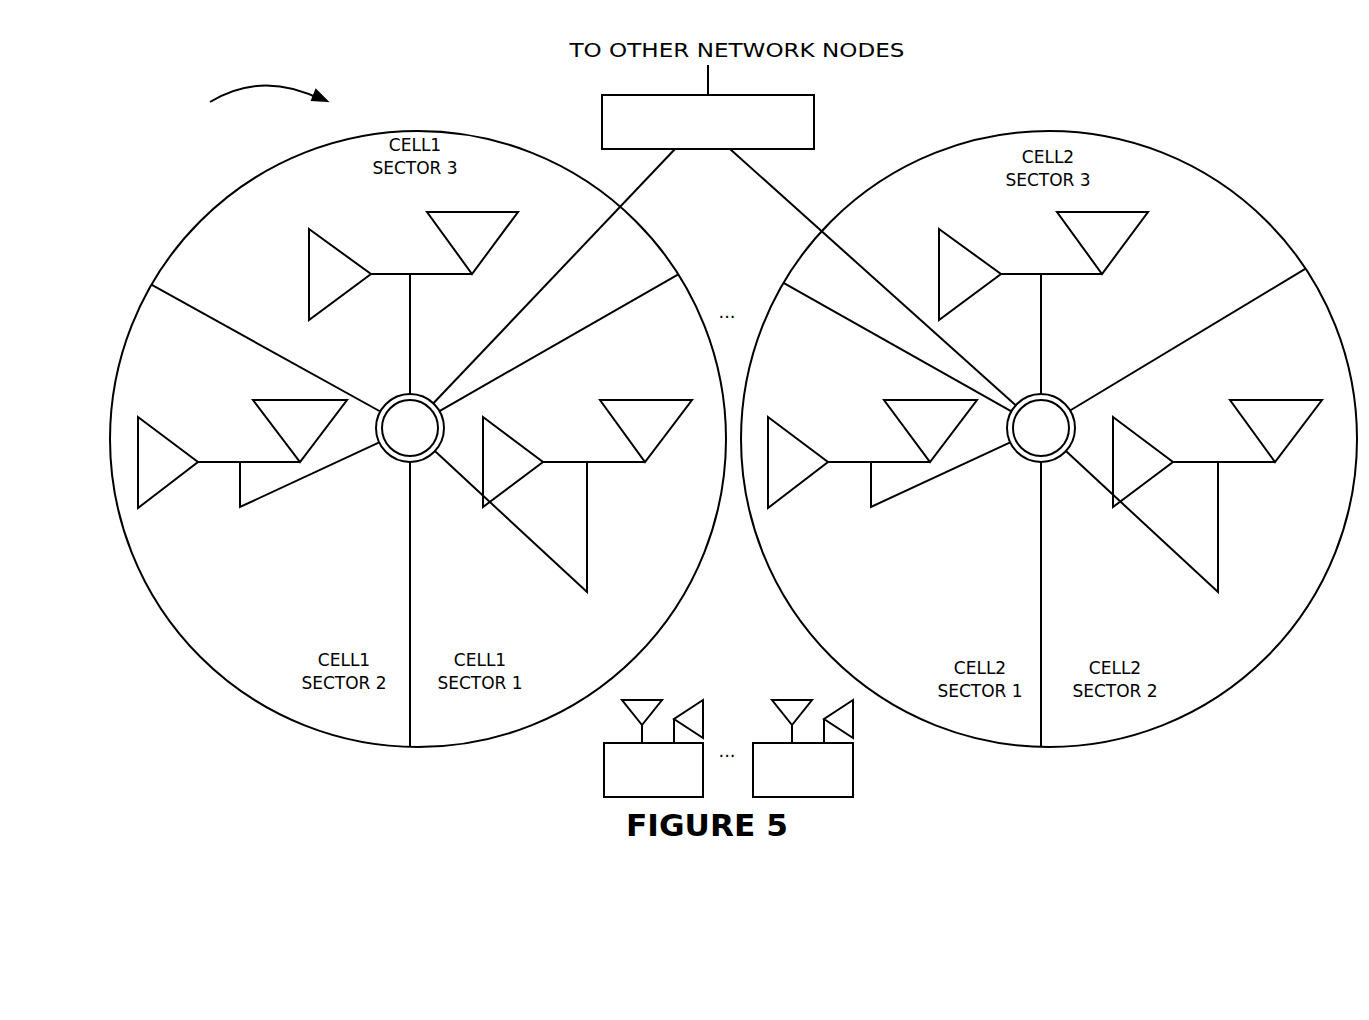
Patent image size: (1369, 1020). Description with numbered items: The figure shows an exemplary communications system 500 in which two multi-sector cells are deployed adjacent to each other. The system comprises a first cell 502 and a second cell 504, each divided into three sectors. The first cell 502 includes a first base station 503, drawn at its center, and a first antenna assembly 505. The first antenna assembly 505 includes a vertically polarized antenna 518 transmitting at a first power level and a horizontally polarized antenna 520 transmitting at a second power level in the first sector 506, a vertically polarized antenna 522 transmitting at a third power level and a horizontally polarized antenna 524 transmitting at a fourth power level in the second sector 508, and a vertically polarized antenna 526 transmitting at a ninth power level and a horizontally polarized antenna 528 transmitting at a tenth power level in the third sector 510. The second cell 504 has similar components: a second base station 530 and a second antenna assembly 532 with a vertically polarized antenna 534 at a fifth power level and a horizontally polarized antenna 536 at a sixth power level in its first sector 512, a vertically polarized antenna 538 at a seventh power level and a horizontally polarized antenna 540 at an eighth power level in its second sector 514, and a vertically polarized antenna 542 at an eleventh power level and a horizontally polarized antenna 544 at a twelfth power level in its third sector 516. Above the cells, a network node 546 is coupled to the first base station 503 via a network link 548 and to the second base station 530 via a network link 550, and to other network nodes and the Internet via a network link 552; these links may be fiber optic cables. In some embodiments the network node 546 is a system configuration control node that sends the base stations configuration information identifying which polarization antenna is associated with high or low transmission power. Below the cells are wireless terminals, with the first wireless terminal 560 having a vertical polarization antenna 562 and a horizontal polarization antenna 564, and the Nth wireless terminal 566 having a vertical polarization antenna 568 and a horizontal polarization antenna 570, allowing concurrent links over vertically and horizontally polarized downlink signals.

The communications system 500 is at (255, 109).
The first cell 502 is at (173, 252).
The first base station 503 is at (440, 418).
The second cell 504 is at (1262, 218).
The first antenna assembly 505 is at (381, 408).
The first sector 506 is at (453, 718).
The second sector 508 is at (342, 712).
The third sector 510 is at (463, 150).
The first sector 512 is at (986, 712).
The second sector 514 is at (1108, 715).
The third sector 516 is at (1050, 134).
The vertically polarized antenna 518 is at (658, 398).
The horizontally polarized antenna 520 is at (507, 433).
The vertically polarized antenna 522 is at (305, 399).
The horizontally polarized antenna 524 is at (174, 440).
The vertically polarized antenna 526 is at (485, 212).
The horizontally polarized antenna 528 is at (333, 250).
The second base station 530 is at (1072, 410).
The second antenna assembly 532 is at (1058, 396).
The vertically polarized antenna 534 is at (933, 398).
The horizontally polarized antenna 536 is at (830, 428).
The vertically polarized antenna 538 is at (1287, 398).
The horizontally polarized antenna 540 is at (1137, 431).
The vertically polarized antenna 542 is at (1118, 212).
The horizontally polarized antenna 544 is at (958, 240).
The network node 546 is at (815, 122).
The network link 548 is at (650, 177).
The network link 550 is at (782, 197).
The network link 552 is at (708, 90).
The wireless terminal 560 is at (604, 780).
The vertical polarization antenna 562 is at (645, 700).
The horizontal polarization antenna 564 is at (703, 708).
The wireless terminal 566 is at (853, 790).
The vertical polarization antenna 568 is at (788, 700).
The horizontal polarization antenna 570 is at (853, 718).